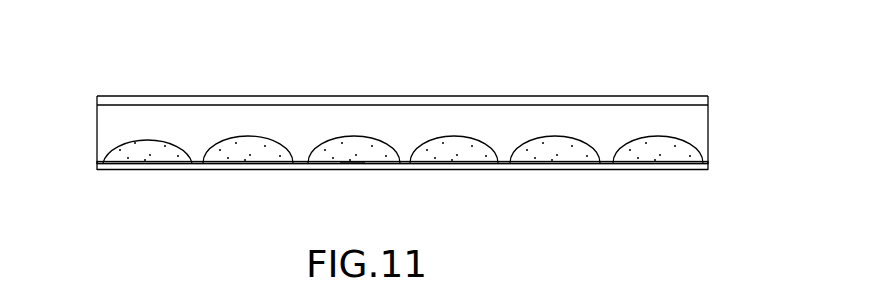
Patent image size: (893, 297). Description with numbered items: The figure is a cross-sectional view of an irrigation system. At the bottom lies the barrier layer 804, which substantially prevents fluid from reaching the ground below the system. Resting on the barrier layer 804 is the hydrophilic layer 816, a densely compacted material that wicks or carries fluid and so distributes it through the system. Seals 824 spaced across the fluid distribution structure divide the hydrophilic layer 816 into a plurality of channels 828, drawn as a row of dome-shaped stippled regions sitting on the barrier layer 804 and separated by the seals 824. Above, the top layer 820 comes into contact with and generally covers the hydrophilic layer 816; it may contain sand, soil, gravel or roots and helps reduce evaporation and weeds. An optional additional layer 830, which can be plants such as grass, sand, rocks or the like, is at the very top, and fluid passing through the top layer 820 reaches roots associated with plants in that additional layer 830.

The barrier layer 804 is at (457, 170).
The hydrophilic layer 816 is at (352, 143).
The top layer 820 is at (705, 123).
The seals 824 is at (102, 162).
The channels 828 is at (365, 147).
The additional layer 830 is at (708, 97).